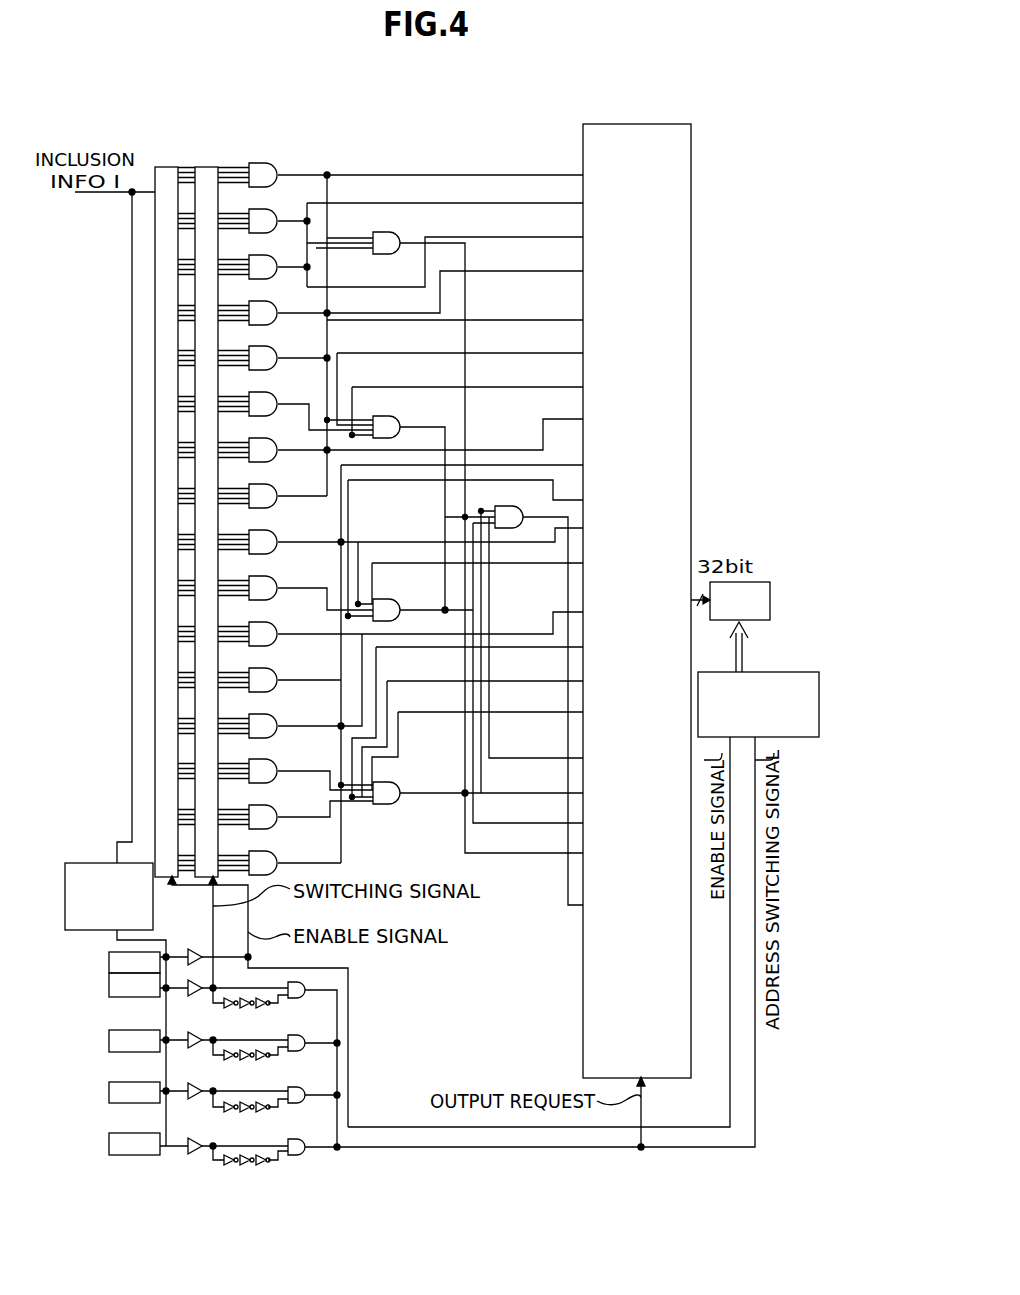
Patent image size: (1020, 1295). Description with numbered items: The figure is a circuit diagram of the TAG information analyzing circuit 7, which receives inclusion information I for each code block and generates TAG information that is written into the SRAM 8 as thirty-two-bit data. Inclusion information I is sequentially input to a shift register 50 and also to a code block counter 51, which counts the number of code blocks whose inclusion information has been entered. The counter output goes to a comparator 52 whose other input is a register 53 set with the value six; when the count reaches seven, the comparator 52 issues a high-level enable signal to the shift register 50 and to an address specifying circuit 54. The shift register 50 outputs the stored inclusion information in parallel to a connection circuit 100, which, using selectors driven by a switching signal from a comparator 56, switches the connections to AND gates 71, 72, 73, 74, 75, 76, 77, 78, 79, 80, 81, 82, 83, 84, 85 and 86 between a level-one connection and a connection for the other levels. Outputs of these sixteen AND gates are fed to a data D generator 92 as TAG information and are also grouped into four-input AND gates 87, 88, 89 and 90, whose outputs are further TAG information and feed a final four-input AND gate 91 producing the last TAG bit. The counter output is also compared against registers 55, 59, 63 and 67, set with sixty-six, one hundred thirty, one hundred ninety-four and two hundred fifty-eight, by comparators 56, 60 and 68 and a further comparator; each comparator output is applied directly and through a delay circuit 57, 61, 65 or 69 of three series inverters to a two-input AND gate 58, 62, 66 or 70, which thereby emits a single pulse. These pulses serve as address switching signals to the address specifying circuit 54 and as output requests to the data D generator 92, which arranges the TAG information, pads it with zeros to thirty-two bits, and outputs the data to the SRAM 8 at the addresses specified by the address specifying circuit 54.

The TAG information analyzing circuit 7 is at (445, 155).
The SRAM 8 is at (756, 622).
The shift register 50 is at (166, 166).
The code block counter 51 is at (116, 862).
The comparator 52 is at (204, 946).
The register 53 is at (109, 956).
The address specifying circuit 54 is at (724, 672).
The register 55 is at (109, 988).
The comparator 56 is at (195, 997).
The delay circuit 57 is at (230, 1011).
The 2-input AND gate 58 is at (300, 982).
The register 59 is at (109, 1030).
The comparator 60 is at (195, 1032).
The delay circuit 61 is at (230, 1063).
The 2-input AND gate 62 is at (300, 1035).
The register 63 is at (109, 1082).
The delay circuit 65 is at (230, 1115).
The 2-input AND gate 66 is at (300, 1087).
The register 67 is at (109, 1133).
The comparator 68 is at (195, 1138).
The delay circuit 69 is at (230, 1168).
The 2-input AND gate 70 is at (300, 1139).
The AND gate 71 is at (262, 155).
The AND gate 72 is at (262, 201).
The AND gate 73 is at (262, 247).
The AND gate 74 is at (262, 293).
The AND gate 75 is at (262, 338).
The AND gate 76 is at (262, 384).
The AND gate 77 is at (262, 430).
The AND gate 78 is at (262, 476).
The AND gate 79 is at (262, 522).
The AND gate 80 is at (262, 568).
The AND gate 81 is at (262, 614).
The AND gate 82 is at (262, 660).
The AND gate 83 is at (262, 706).
The AND gate 84 is at (262, 751).
The AND gate 85 is at (262, 797).
The AND gate 86 is at (262, 843).
The 4-input AND gate 87 is at (378, 232).
The 4-input AND gate 88 is at (378, 416).
The 4-input AND gate 89 is at (378, 599).
The 4-input AND gate 90 is at (378, 782).
The 4-input AND gate 91 is at (500, 506).
The data D generator 92 is at (691, 258).
The connection circuit 100 is at (212, 166).